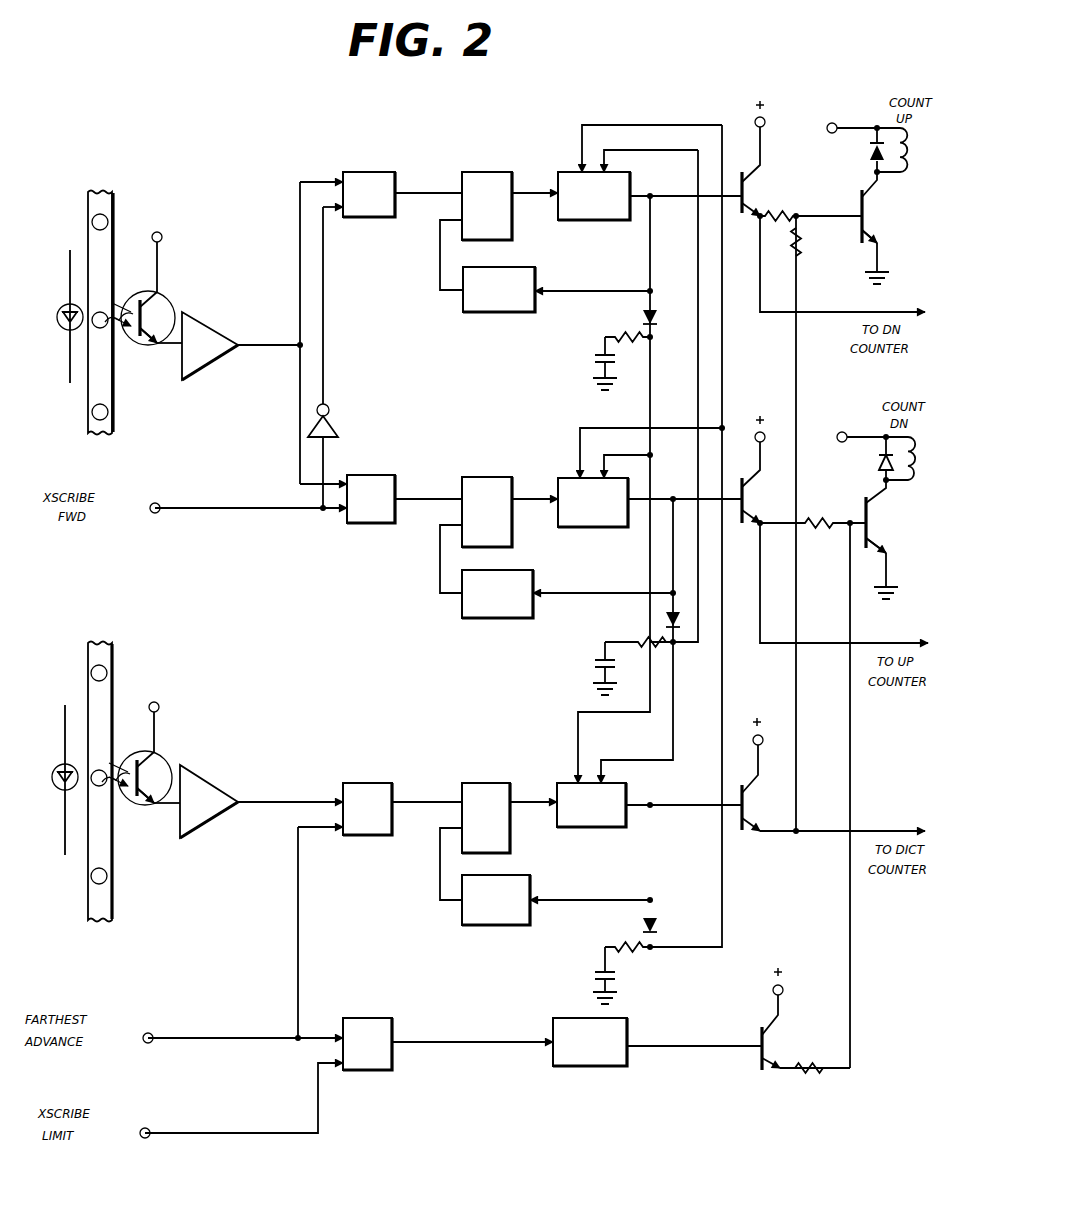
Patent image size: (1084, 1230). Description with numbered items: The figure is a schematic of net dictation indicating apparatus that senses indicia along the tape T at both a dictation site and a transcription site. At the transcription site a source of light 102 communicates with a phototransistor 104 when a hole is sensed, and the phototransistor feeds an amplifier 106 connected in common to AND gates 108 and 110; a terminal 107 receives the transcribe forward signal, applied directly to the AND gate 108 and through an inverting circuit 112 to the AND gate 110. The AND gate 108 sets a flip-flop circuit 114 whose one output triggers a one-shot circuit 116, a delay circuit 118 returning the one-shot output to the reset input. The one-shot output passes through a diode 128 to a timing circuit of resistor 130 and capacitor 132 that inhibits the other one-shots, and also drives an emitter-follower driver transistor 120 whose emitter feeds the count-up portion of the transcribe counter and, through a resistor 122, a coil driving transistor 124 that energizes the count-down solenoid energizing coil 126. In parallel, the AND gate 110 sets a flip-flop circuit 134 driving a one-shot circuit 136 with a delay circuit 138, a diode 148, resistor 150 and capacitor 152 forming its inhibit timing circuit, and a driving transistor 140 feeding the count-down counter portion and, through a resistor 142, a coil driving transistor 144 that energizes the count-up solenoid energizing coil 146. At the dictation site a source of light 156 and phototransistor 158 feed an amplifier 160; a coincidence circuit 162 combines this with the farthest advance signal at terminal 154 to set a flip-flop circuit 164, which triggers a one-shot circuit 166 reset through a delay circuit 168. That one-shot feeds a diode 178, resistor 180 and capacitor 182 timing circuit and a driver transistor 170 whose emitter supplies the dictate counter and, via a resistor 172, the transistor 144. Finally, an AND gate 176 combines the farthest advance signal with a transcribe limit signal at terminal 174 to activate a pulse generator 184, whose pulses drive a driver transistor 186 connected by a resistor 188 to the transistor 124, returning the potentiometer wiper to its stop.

The source of light 102 is at (59, 328).
The phototransistor 104 is at (166, 300).
The amplifier 106 is at (205, 360).
The terminal 107 is at (155, 513).
The AND gate 108 is at (372, 524).
The AND gate 110 is at (356, 172).
The inverting circuit 112 is at (334, 428).
The flip-flop circuit 114 is at (474, 476).
The one-shot circuit 116 is at (564, 528).
The delay circuit 118 is at (476, 618).
The driver transistor 120 is at (744, 492).
The resistor 122 is at (818, 526).
The coil driving transistor 124 is at (884, 521).
The count-down solenoid energizing coil 126 is at (906, 478).
The diode 128 is at (678, 622).
The resistor 130 is at (616, 638).
The capacitor 132 is at (598, 663).
The flip-flop circuit 134 is at (480, 172).
The one-shot circuit 136 is at (566, 220).
The delay circuit 138 is at (482, 312).
The driving transistor 140 is at (748, 190).
The resistor 142 is at (777, 210).
The coil driving transistor 144 is at (878, 196).
The count-up solenoid energizing coil 146 is at (918, 142).
The diode 148 is at (654, 316).
The resistor 150 is at (614, 332).
The capacitor 152 is at (598, 358).
The terminal 154 is at (152, 1034).
The source of light 156 is at (52, 768).
The phototransistor 158 is at (162, 762).
The amplifier 160 is at (210, 778).
The coincidence circuit 162 is at (360, 782).
The flip-flop circuit 164 is at (472, 782).
The one-shot circuit 166 is at (570, 830).
The delay circuit 168 is at (476, 926).
The driver transistor 170 is at (748, 800).
The resistor 172 is at (800, 258).
The terminal 174 is at (147, 1140).
The AND gate 176 is at (376, 1072).
The diode 178 is at (656, 924).
The resistor 180 is at (618, 944).
The capacitor 182 is at (616, 977).
The pulse generator 184 is at (574, 1070).
The driver transistor 186 is at (777, 1042).
The resistor 188 is at (816, 1072).
The tape T is at (104, 233).